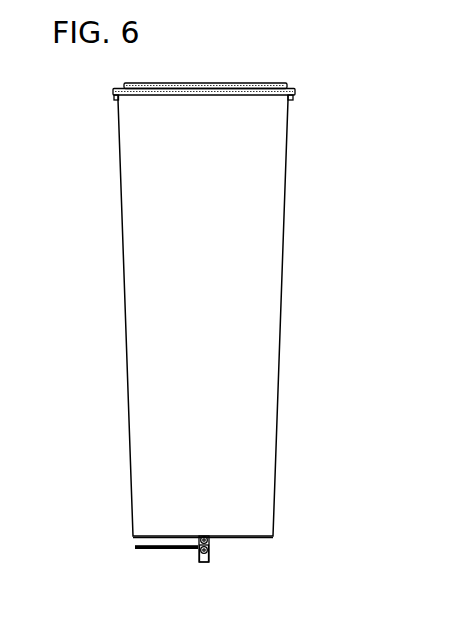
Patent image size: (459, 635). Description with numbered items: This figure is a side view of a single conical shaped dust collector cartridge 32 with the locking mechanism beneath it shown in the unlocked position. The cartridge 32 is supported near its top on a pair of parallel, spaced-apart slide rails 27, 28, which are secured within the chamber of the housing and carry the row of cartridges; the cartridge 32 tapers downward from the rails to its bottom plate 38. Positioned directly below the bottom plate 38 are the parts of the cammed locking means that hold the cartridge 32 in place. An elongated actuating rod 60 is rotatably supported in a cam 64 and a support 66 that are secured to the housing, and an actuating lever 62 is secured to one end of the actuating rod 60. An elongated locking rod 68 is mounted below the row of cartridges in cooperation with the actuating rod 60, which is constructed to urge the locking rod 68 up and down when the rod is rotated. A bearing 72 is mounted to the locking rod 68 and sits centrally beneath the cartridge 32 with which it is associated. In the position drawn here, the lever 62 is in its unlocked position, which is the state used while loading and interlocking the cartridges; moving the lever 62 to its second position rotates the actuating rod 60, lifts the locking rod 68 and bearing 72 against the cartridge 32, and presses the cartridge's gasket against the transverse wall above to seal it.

The slide rail 27 is at (115, 98).
The slide rail 28 is at (293, 101).
The conical shaped dust collector cartridge 32 is at (165, 517).
The bottom plate 38 is at (273, 537).
The actuating rod 60 is at (200, 560).
The actuating lever 62 is at (163, 550).
The cam 64 is at (208, 551).
The support 66 is at (206, 563).
The locking rod 68 is at (208, 541).
The bearing 72 is at (199, 540).